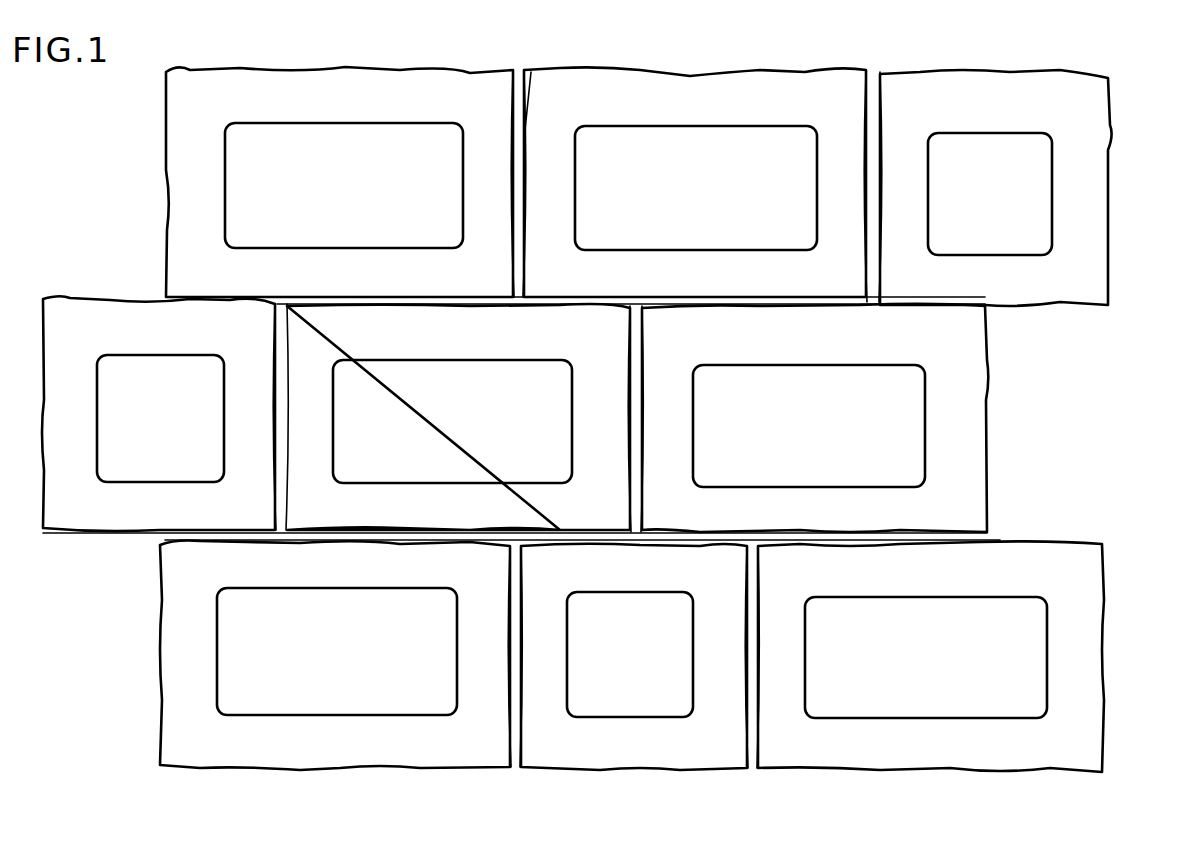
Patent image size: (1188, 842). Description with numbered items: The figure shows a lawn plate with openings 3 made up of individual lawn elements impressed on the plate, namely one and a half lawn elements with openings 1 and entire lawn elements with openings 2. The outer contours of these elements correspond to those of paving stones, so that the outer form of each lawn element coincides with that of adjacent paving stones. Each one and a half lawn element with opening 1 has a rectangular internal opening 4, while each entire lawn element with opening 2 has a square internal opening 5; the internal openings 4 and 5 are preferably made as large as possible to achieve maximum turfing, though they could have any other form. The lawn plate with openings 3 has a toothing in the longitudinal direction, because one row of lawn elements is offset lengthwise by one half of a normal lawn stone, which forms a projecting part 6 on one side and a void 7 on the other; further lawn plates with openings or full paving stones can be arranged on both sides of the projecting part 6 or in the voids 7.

The one and a half lawn element with opening 1 is at (490, 86).
The entire lawn element with opening 2 is at (1022, 93).
The lawn plate with openings 3 is at (1128, 171).
The internal opening 4 is at (333, 125).
The internal opening 5 is at (975, 134).
The projecting part 6 is at (93, 270).
The void 7 is at (1023, 408).